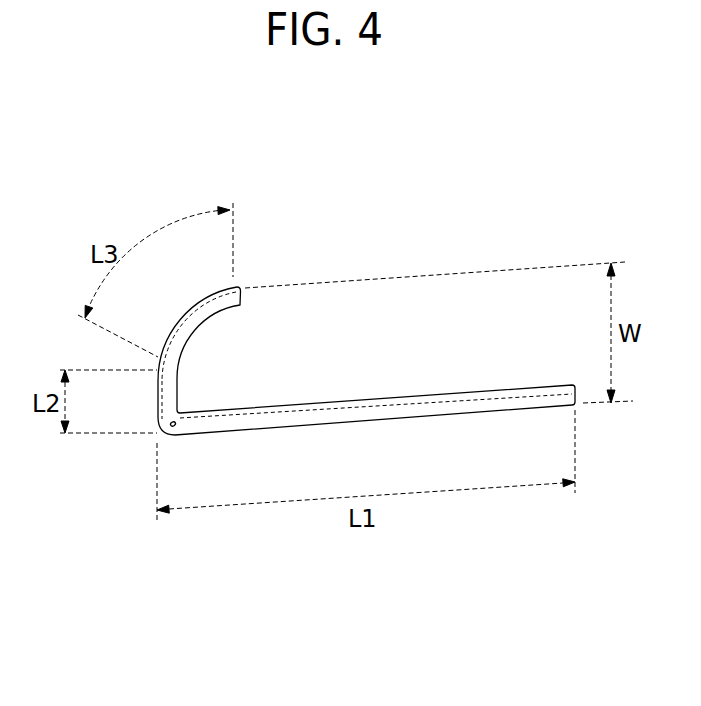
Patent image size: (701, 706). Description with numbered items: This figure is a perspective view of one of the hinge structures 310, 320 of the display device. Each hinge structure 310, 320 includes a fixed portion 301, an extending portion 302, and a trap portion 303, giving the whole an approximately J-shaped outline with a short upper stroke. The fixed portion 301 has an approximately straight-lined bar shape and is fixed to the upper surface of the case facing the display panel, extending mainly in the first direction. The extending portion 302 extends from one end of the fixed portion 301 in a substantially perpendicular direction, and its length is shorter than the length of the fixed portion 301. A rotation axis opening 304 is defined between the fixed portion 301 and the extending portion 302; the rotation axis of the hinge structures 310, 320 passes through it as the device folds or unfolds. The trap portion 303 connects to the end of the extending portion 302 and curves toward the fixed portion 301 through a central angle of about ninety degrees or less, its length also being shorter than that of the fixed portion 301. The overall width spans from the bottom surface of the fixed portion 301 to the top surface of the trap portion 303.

The fixed portion 301 is at (440, 410).
The extending portion 302 is at (172, 388).
The trap portion 303 is at (222, 303).
The rotation axis opening 304 is at (173, 428).
The hinge structure 310 is at (142, 220).
The hinge structure 320 is at (330, 324).